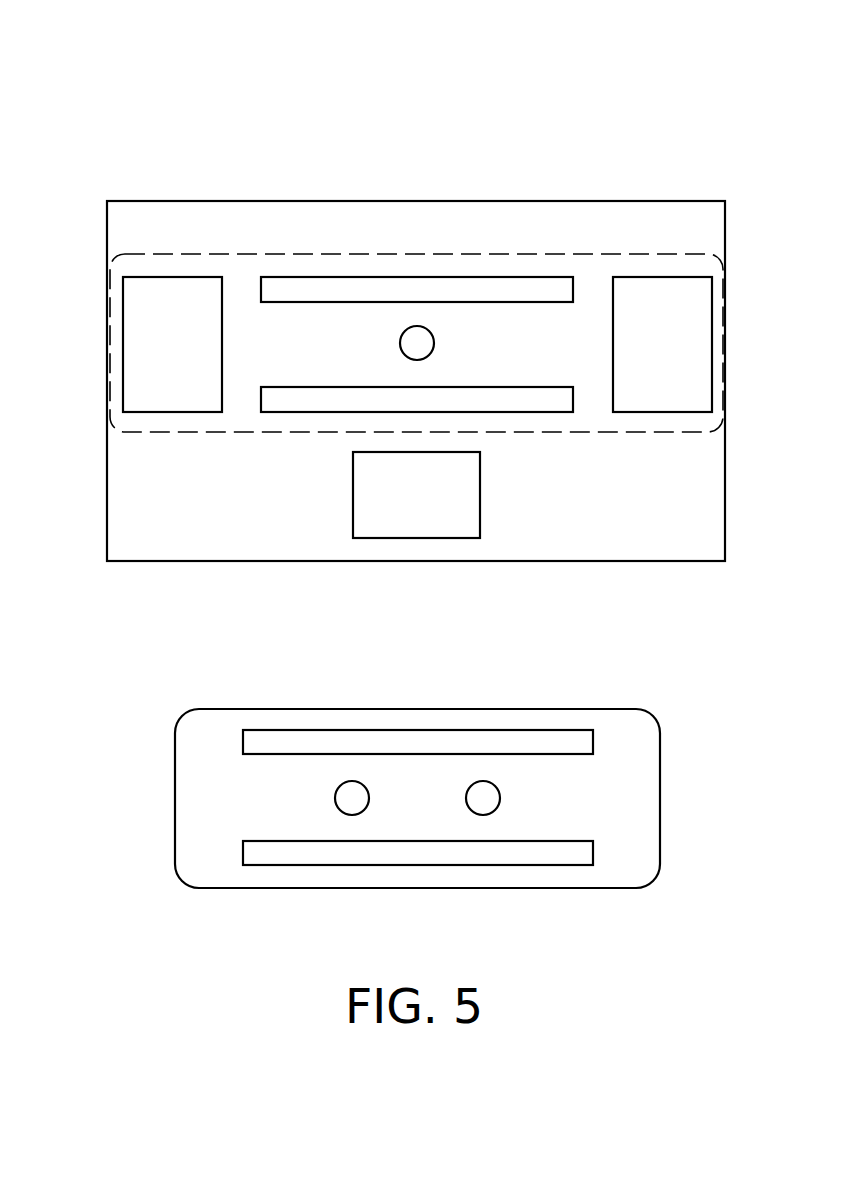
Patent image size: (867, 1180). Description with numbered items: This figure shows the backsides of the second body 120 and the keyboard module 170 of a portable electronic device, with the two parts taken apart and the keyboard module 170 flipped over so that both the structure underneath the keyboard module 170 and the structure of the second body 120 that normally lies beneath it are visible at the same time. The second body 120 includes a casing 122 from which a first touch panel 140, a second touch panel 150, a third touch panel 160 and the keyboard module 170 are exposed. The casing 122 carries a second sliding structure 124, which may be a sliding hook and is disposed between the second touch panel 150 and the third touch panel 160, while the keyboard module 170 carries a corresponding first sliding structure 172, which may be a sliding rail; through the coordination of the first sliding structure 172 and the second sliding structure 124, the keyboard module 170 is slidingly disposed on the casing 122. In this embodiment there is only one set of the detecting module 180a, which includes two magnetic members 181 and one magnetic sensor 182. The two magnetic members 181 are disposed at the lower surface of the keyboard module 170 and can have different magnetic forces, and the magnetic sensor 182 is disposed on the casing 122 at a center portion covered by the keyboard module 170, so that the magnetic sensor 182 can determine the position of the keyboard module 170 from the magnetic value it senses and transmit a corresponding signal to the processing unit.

The second body 120 is at (130, 150).
The casing 122 is at (695, 503).
The second sliding structure 124 is at (527, 400).
The first touch panel 140 is at (460, 510).
The second touch panel 150 is at (150, 342).
The third touch panel 160 is at (683, 342).
The keyboard module 170 is at (628, 802).
The first sliding structure 172 is at (535, 853).
The detecting module 180a is at (739, 95).
The magnetic members 181 is at (482, 800).
The magnetic sensor 182 is at (417, 343).